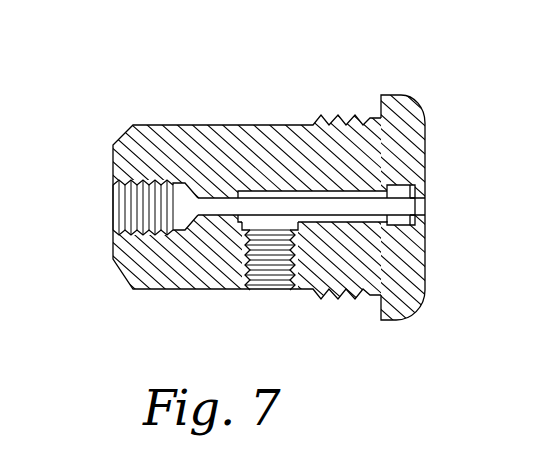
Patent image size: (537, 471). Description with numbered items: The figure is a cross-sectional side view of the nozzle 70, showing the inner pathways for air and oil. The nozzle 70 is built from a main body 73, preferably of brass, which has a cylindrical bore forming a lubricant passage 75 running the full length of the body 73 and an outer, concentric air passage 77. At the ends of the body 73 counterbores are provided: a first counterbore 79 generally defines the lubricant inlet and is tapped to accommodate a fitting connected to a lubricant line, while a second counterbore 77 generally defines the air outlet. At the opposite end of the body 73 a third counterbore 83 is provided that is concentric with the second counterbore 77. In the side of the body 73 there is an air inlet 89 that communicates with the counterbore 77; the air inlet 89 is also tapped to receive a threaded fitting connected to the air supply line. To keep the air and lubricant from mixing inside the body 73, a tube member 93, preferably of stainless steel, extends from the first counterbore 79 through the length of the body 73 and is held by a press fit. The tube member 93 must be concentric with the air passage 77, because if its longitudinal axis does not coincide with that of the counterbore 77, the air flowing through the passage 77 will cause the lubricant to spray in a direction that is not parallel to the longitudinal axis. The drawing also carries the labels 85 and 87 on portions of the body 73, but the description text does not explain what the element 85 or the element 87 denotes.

The fitting assembly 70 is at (178, 106).
The body 73 is at (170, 267).
The central bore 75 is at (222, 213).
The annular passage 77 is at (267, 192).
The internally threaded bore 79 is at (123, 212).
The counterbore 83 is at (403, 220).
The head 85 is at (408, 300).
The conical seat 87 is at (195, 214).
The threaded port 89 is at (268, 280).
The orifice 93 is at (412, 202).